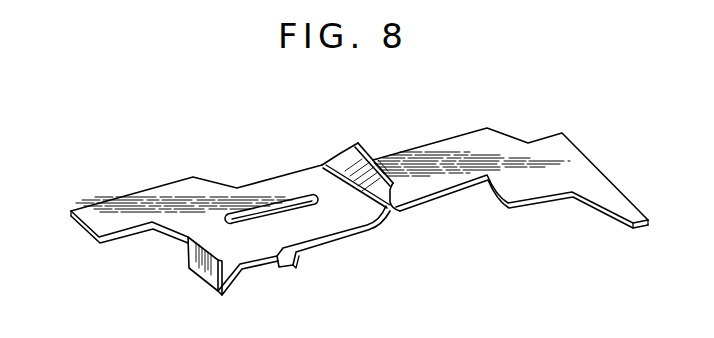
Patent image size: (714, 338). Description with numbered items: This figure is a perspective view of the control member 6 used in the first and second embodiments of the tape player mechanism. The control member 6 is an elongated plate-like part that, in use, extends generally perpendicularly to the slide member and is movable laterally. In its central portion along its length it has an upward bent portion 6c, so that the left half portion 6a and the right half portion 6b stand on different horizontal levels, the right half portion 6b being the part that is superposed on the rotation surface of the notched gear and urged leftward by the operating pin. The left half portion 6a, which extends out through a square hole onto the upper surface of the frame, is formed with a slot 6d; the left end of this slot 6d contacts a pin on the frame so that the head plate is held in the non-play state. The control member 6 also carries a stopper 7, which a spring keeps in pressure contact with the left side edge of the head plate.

The control member 6 is at (351, 233).
The left half portion 6a is at (256, 198).
The right half portion 6b is at (455, 147).
The upward bent portion 6c is at (358, 143).
The slot 6d is at (293, 197).
The stopper 7 is at (200, 263).